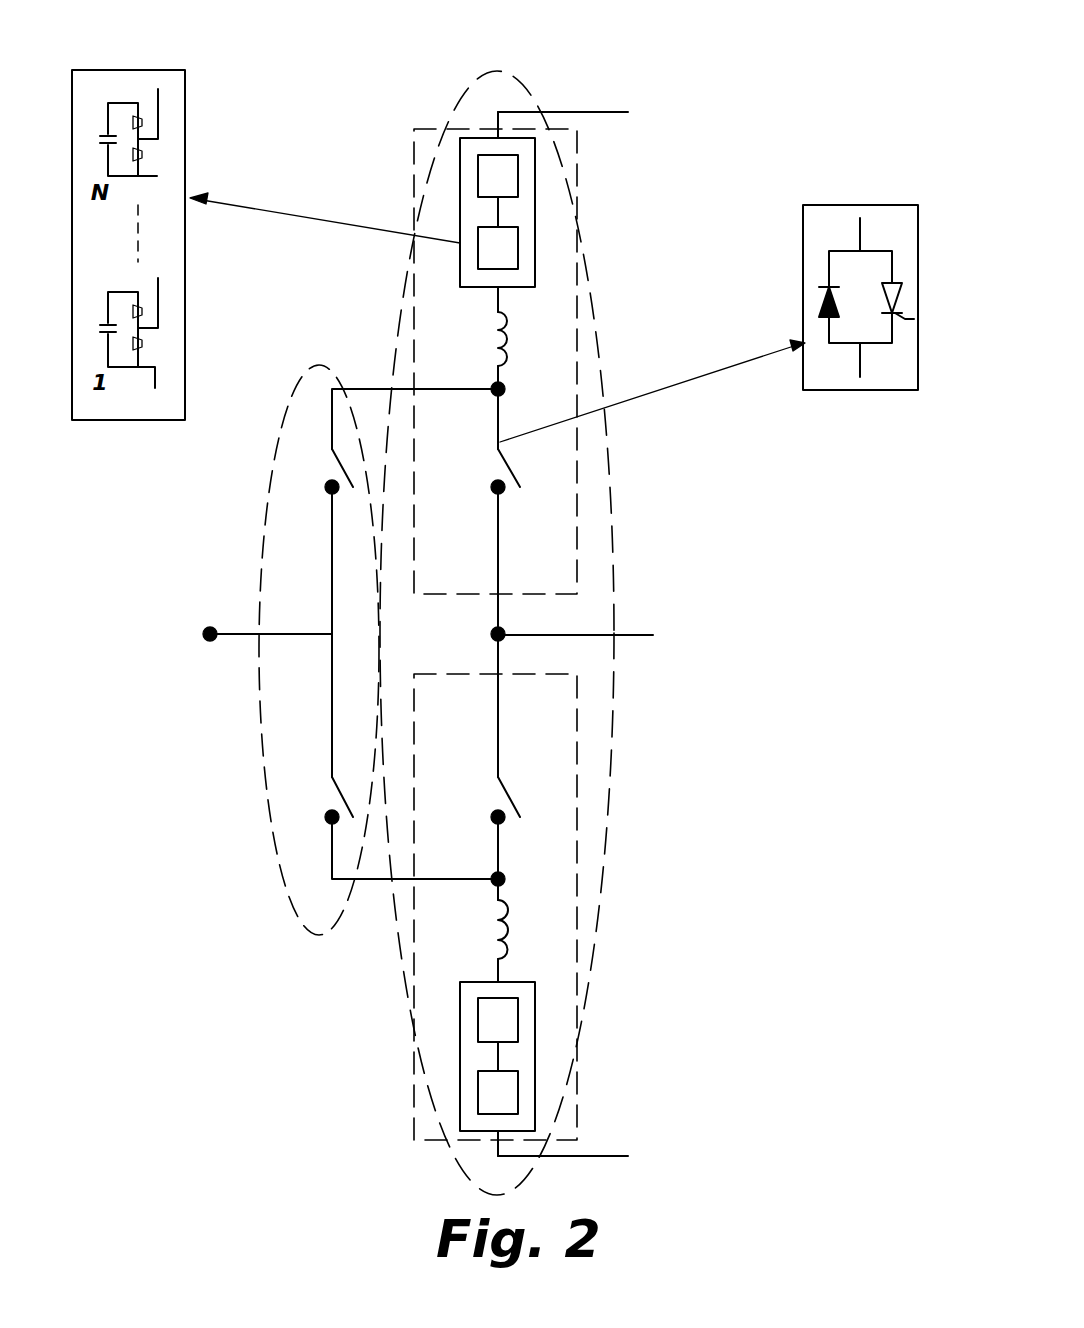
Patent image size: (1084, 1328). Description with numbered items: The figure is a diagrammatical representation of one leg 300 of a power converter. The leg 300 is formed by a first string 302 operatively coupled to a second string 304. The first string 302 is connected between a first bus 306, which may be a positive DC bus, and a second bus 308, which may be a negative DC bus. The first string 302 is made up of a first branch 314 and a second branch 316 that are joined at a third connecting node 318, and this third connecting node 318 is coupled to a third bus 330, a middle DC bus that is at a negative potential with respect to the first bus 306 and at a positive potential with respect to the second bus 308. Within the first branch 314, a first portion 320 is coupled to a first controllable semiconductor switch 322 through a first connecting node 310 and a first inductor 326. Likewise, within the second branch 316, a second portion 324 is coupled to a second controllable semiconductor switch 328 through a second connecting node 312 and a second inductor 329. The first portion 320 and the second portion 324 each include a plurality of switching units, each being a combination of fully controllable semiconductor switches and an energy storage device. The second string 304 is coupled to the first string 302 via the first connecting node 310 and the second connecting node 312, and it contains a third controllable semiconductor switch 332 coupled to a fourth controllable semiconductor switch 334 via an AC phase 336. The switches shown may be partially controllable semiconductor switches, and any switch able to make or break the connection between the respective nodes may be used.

The leg 300 is at (806, 24).
The first string 302 is at (600, 268).
The second string 304 is at (326, 372).
The first bus 306 is at (586, 112).
The second bus 308 is at (587, 1156).
The first connecting node 310 is at (496, 386).
The second connecting node 312 is at (496, 884).
The first branch 314 is at (577, 362).
The second branch 316 is at (577, 895).
The third connecting node 318 is at (505, 640).
The first portion 320 is at (460, 200).
The first controllable semiconductor switch 322 is at (500, 446).
The second portion 324 is at (460, 1068).
The first inductor 326 is at (505, 341).
The second controllable semiconductor switch 328 is at (500, 777).
The second inductor 329 is at (505, 930).
The third bus 330 is at (640, 635).
The third controllable semiconductor switch 332 is at (332, 450).
The fourth controllable semiconductor switch 334 is at (332, 777).
The AC phase 336 is at (237, 634).